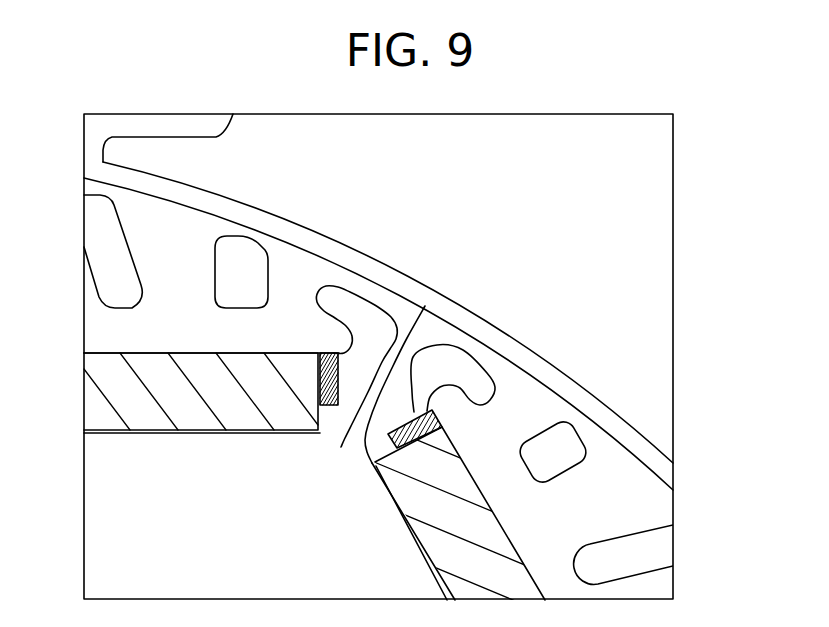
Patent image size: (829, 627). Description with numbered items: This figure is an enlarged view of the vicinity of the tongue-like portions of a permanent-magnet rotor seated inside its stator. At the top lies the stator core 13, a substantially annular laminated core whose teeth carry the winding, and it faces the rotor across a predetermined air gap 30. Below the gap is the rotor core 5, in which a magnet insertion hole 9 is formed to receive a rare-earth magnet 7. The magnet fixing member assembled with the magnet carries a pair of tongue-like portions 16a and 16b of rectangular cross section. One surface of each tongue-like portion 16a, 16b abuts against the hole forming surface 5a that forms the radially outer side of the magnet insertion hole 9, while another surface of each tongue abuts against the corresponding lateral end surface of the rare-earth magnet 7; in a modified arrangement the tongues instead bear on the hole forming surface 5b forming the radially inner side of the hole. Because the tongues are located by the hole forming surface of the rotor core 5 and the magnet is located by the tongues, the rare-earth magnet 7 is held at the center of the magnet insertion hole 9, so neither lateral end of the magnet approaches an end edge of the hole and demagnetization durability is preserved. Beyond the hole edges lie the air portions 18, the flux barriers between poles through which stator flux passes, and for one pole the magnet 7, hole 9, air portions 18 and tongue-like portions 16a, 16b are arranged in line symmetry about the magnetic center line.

The rotor core 5 is at (133, 492).
The hole forming surface 5a is at (318, 375).
The hole forming surface 5b is at (322, 430).
The rare-earth magnet 7 is at (133, 382).
The magnet insertion hole 9 is at (145, 437).
The stator core 13 is at (595, 297).
The tongue-like portion 16a is at (448, 349).
The tongue-like portion 16b is at (338, 375).
The air portion 18 is at (375, 328).
The air gap 30 is at (577, 393).